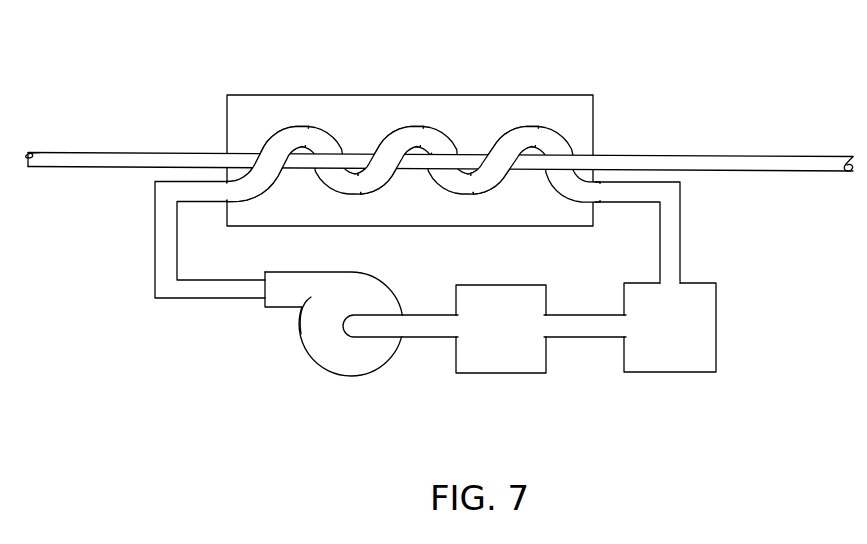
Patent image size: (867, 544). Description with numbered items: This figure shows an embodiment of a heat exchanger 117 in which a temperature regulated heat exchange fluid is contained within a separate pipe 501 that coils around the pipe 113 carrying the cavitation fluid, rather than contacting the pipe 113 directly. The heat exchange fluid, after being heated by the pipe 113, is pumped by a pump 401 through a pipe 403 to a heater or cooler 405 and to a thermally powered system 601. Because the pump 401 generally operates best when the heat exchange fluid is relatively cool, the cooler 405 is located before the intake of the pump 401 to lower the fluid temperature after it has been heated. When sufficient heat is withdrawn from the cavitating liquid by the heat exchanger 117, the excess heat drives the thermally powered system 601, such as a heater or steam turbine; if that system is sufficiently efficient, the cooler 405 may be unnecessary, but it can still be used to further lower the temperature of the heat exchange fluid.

The pipe 113 is at (697, 156).
The heat exchanger 117 is at (439, 213).
The separate pipe 501 is at (418, 126).
The pipe 403 is at (155, 237).
The pump 401 is at (338, 377).
The heater or cooler 405 is at (523, 373).
The thermally powered system 601 is at (657, 373).